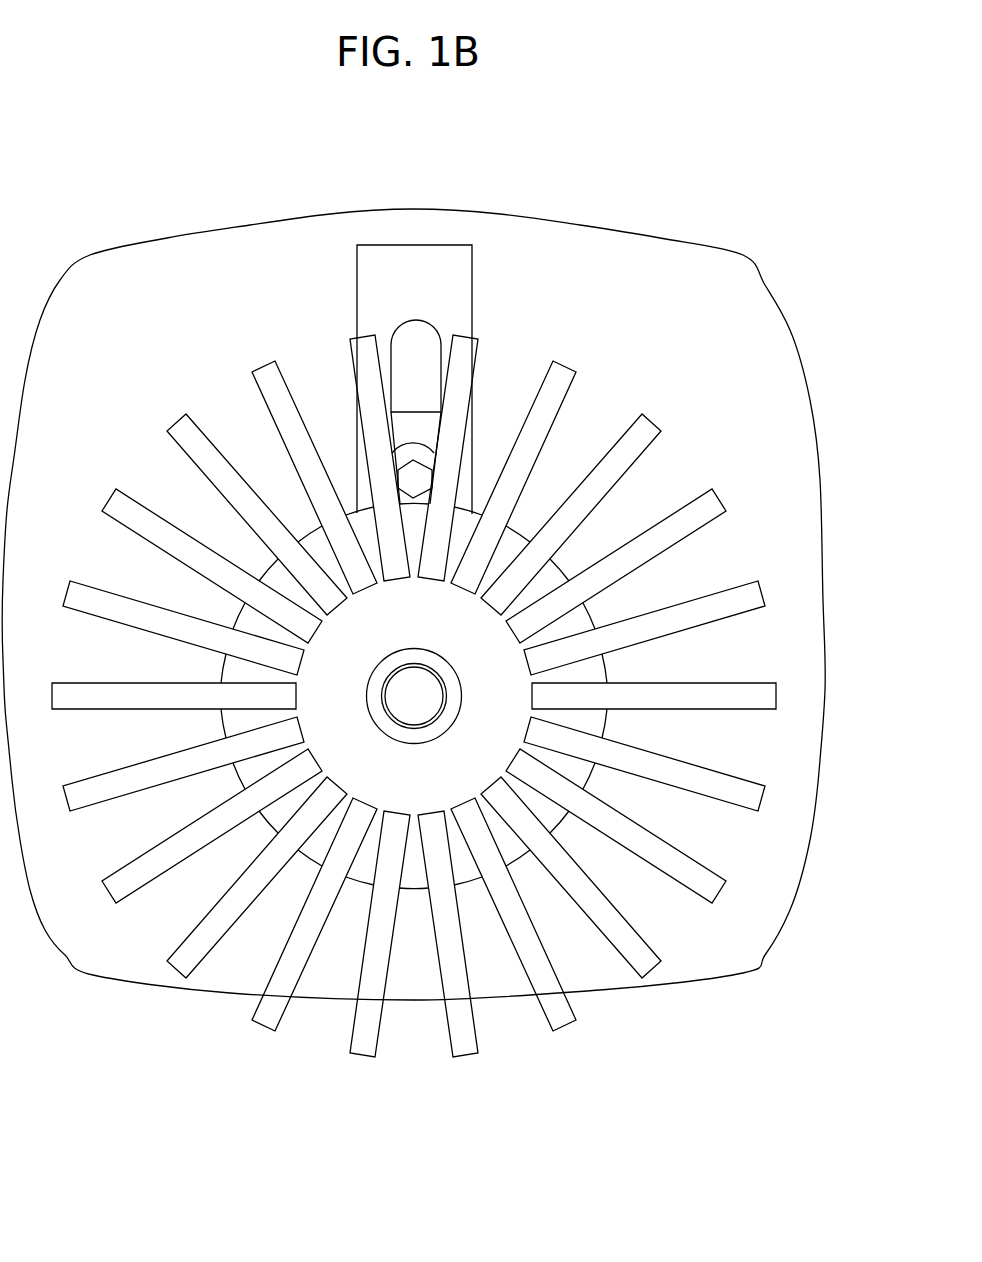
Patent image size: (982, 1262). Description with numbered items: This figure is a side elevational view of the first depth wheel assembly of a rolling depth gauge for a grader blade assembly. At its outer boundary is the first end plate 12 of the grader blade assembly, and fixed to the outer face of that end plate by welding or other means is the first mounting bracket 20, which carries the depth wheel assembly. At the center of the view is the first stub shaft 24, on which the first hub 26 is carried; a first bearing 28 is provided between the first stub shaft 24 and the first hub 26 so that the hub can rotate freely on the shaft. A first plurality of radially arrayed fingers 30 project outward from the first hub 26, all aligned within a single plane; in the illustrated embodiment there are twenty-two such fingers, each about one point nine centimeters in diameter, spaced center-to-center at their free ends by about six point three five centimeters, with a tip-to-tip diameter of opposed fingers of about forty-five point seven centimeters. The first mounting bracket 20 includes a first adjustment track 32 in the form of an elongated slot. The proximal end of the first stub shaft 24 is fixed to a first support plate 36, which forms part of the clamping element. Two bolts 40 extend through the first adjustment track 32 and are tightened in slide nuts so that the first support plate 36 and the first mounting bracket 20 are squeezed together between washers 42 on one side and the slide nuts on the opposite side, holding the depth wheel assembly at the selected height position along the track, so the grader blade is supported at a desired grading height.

The first end plate 12 is at (720, 305).
The first mounting bracket 20 is at (458, 278).
The first stub shaft 24 is at (420, 708).
The first hub 26 is at (578, 772).
The first bearing 28 is at (410, 660).
The first plurality of radially arrayed fingers 30 is at (645, 433).
The first adjustment track 32 is at (392, 342).
The first support plate 36 is at (421, 474).
The bolts 40 is at (427, 443).
The washers 42 is at (404, 456).